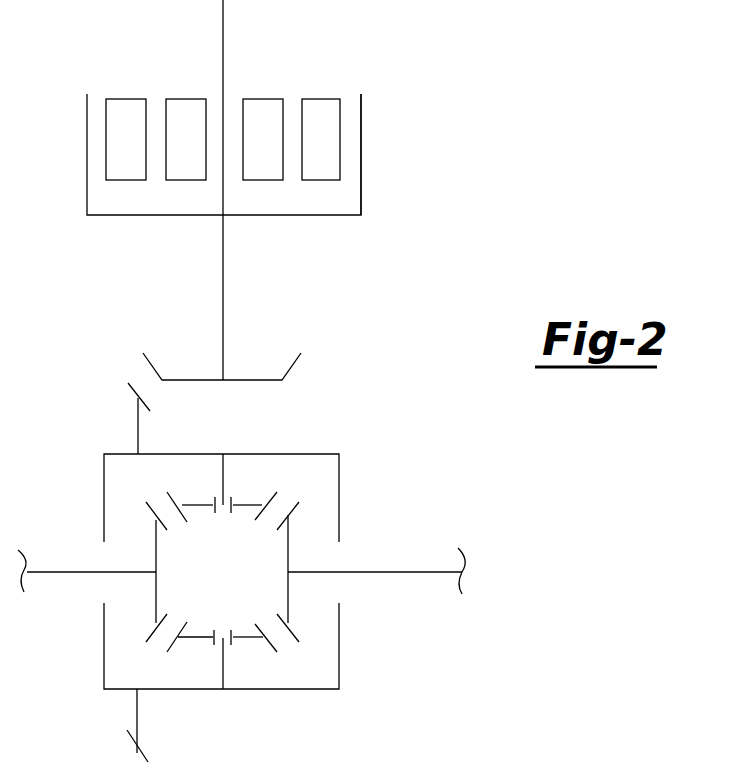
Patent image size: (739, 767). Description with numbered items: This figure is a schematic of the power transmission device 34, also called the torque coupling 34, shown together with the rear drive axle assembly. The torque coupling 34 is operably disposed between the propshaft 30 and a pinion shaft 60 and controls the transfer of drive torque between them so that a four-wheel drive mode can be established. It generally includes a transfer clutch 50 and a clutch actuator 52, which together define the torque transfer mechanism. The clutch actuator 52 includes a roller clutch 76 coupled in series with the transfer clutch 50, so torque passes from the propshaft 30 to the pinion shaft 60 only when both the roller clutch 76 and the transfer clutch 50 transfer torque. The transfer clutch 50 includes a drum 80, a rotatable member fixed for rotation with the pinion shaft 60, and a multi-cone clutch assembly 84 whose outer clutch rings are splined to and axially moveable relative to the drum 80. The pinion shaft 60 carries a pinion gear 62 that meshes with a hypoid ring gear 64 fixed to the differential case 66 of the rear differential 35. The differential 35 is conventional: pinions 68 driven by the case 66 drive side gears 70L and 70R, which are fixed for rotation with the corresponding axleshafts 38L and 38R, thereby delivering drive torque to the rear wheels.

The propshaft 30 is at (223, 28).
The transfer clutch 50 is at (95, 234).
The clutch actuator 52 is at (157, 80).
The roller clutch 76 is at (258, 81).
The multi-cone clutch assembly 84 is at (332, 81).
The drum 80 is at (361, 146).
The power transmission device 34 is at (396, 273).
The pinion shaft 60 is at (223, 283).
The pinion gear 62 is at (293, 364).
The differential case 66 is at (339, 645).
The rear differential 35 is at (361, 541).
The pinions 68 is at (242, 505).
The left side gear 70L is at (156, 590).
The right side gear 70R is at (290, 543).
The left axleshaft 38L is at (50, 572).
The right axleshaft 38R is at (400, 572).
The hypoid ring gear 64 is at (138, 708).